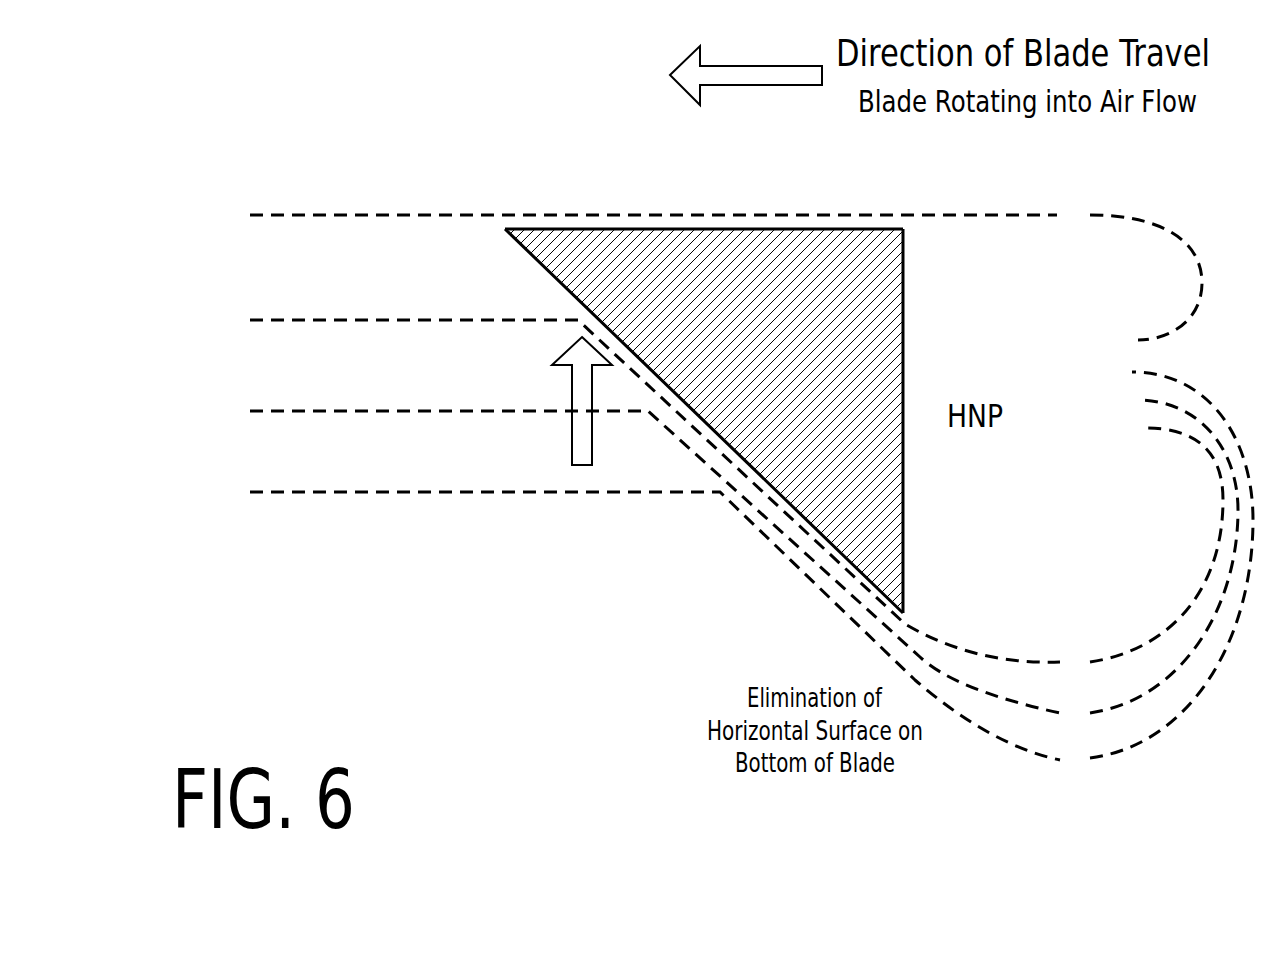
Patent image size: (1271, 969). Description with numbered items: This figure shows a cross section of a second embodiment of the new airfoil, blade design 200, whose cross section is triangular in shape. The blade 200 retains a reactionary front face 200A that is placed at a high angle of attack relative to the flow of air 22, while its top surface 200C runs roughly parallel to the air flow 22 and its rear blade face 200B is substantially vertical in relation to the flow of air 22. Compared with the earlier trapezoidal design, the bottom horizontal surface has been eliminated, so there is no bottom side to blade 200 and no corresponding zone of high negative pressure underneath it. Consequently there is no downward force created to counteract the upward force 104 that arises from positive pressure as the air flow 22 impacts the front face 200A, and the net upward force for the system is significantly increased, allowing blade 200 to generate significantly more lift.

The blade design 200 is at (688, 343).
The reactionary front face 200A is at (547, 278).
The rear blade face 200B is at (912, 337).
The top surface 200C is at (877, 222).
The flow of air 22 is at (312, 222).
The upward force 104 is at (580, 447).